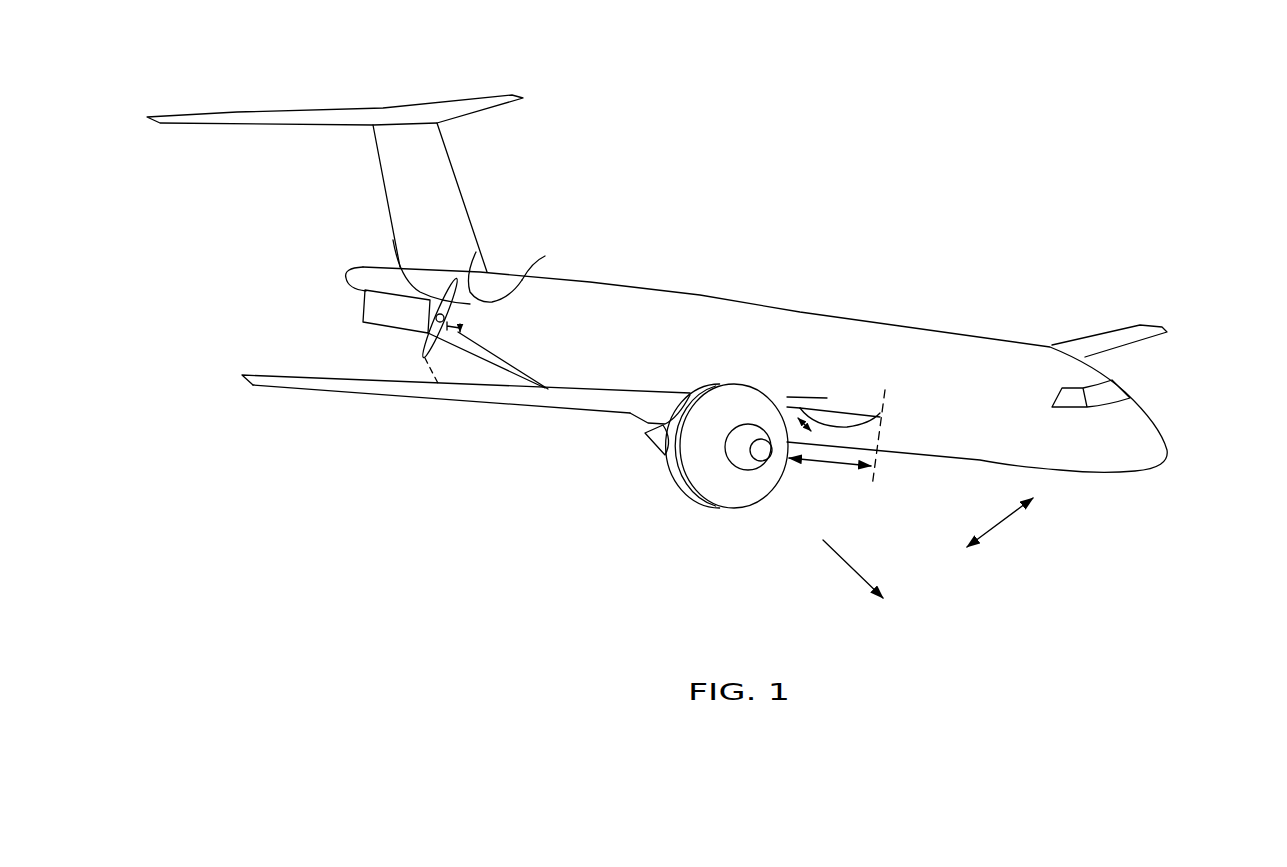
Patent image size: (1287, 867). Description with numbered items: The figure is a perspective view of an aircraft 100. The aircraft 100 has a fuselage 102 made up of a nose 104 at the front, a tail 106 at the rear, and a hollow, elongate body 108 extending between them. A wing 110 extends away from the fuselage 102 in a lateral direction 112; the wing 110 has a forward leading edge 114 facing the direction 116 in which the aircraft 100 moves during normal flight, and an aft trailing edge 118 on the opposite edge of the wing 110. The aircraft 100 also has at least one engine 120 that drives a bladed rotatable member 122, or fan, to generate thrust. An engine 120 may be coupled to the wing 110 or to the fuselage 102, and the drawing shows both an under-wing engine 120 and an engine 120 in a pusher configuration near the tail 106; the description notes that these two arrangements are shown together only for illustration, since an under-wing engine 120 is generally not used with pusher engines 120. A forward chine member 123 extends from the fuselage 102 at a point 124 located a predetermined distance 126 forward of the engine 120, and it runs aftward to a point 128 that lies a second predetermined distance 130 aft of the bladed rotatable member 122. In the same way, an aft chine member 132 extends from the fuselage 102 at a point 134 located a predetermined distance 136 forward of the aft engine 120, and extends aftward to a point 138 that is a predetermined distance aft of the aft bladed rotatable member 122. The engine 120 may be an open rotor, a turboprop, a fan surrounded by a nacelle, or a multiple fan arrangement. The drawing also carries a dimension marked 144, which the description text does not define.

The aircraft 100 is at (1004, 192).
The fuselage 102 is at (710, 310).
The nose 104 is at (1148, 443).
The tail 106 is at (311, 256).
The hollow, elongate body 108 is at (587, 303).
The wing 110 is at (278, 383).
The lateral direction 112 is at (1000, 527).
The forward leading edge 114 is at (559, 400).
The direction of motion 116 is at (852, 565).
The aft trailing edge 118 is at (422, 357).
The engine 120 is at (372, 310).
The bladed rotatable member 122 is at (452, 324).
The forward chine member 123 is at (847, 423).
The point 124 is at (880, 413).
The predetermined distance 126 is at (855, 470).
The point 128 is at (803, 410).
The second predetermined distance 130 is at (800, 408).
The aft chine member 132 is at (476, 252).
The point 134 is at (553, 261).
The predetermined distance 136 is at (445, 326).
The point 138 is at (393, 242).
The distance 144 is at (463, 300).